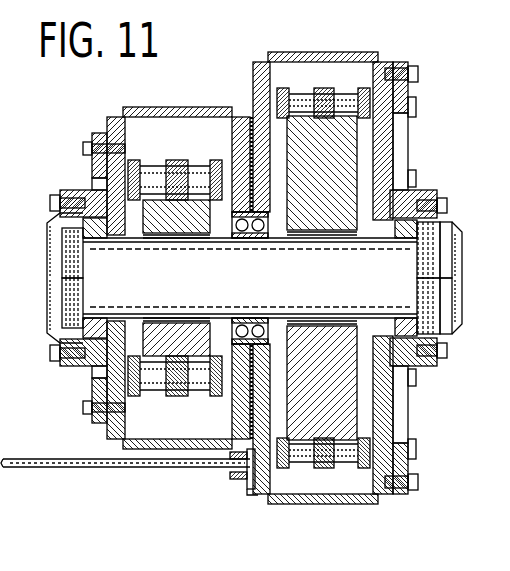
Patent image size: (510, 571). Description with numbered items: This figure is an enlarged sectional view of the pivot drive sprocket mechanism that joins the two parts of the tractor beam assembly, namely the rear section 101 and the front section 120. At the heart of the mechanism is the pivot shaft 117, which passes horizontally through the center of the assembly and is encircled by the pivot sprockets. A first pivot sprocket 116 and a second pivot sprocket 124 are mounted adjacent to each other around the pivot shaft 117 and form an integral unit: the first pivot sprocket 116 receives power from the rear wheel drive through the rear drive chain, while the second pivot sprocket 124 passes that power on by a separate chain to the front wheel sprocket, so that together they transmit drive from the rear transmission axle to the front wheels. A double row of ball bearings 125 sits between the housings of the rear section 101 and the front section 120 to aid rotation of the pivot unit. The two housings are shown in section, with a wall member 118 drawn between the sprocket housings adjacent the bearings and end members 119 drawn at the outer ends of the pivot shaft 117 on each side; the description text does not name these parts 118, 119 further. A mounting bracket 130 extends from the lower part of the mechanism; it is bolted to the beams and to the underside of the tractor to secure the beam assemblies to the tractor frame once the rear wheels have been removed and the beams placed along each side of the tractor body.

The rear section 101 is at (430, 73).
The first pivot sprocket 116 is at (346, 466).
The pivot shaft 117 is at (397, 277).
The housing wall / spacer 118 is at (241, 120).
The bearing cap 119 is at (83, 192).
The front section 120 is at (266, 207).
The second pivot sprocket 124 is at (153, 162).
The double row of ball bearings 125 is at (258, 234).
The mounting bracket 130 is at (159, 468).